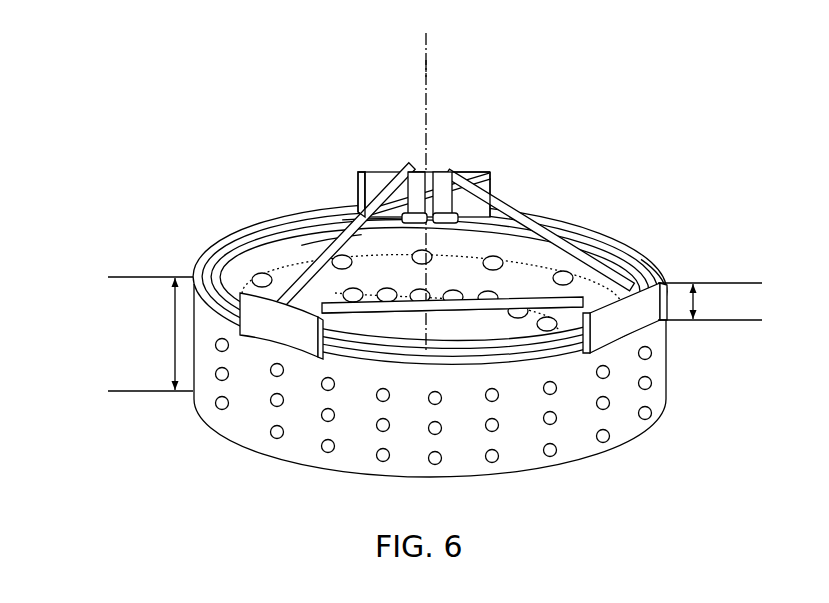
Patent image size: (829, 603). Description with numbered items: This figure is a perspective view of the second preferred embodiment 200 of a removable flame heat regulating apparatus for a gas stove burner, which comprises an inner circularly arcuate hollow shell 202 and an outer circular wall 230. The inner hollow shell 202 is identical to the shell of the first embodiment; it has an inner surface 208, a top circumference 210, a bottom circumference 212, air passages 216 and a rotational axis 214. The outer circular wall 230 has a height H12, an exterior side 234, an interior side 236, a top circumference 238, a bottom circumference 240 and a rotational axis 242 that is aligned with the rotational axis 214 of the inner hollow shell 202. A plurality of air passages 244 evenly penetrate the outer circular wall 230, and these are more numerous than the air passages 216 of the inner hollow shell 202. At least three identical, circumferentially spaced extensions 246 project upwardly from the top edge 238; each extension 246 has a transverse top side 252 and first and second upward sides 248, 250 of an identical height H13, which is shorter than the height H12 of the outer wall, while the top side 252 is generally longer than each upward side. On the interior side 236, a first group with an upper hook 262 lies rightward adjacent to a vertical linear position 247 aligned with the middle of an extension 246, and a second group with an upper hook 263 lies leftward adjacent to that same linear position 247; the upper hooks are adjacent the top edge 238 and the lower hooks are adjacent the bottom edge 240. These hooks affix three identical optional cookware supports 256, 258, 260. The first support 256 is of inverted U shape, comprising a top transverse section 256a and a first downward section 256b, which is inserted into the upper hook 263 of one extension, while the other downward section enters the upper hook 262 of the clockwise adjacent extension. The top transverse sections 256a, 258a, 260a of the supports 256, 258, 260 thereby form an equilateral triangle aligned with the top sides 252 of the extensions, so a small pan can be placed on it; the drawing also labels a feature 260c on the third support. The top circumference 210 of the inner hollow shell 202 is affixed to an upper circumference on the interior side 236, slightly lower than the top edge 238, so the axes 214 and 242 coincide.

The second preferred embodiment 200 is at (178, 146).
The inner circularly arcuate hollow shell 202 is at (407, 254).
The inner surface 208 is at (432, 330).
The top circumference 210 is at (655, 272).
The bottom circumference 212 is at (462, 333).
The rotational axis 214 is at (427, 52).
The air passages 216 is at (252, 242).
The outer circular wall 230 is at (486, 399).
The exterior side 234 is at (454, 399).
The interior side 236 is at (602, 262).
The top circumference 238 is at (600, 246).
The bottom circumference 240 is at (630, 452).
The rotational axis 242 is at (427, 75).
The air passages 244 is at (328, 450).
The extensions 246 is at (357, 180).
The vertical linear position 247 is at (409, 170).
The first upward side 248 is at (469, 202).
The second upward side 250 is at (505, 222).
The transverse top side 252 is at (366, 172).
The first optional cookware support 256 is at (479, 225).
The top transverse section 256a is at (520, 210).
The first downward section 256b is at (443, 192).
The second optional cookware support 258 is at (396, 320).
The top transverse section 258a is at (466, 306).
The third optional cookware support 260 is at (328, 236).
The top transverse section 260a is at (327, 278).
The groove 260c is at (368, 178).
The upper hook 262 is at (433, 200).
The upper hook 263 is at (487, 207).
The height H12 is at (150, 334).
The height H13 is at (710, 301).